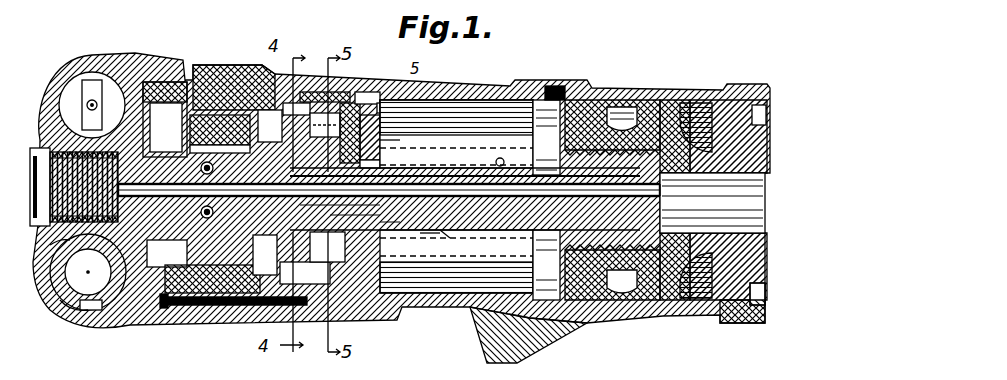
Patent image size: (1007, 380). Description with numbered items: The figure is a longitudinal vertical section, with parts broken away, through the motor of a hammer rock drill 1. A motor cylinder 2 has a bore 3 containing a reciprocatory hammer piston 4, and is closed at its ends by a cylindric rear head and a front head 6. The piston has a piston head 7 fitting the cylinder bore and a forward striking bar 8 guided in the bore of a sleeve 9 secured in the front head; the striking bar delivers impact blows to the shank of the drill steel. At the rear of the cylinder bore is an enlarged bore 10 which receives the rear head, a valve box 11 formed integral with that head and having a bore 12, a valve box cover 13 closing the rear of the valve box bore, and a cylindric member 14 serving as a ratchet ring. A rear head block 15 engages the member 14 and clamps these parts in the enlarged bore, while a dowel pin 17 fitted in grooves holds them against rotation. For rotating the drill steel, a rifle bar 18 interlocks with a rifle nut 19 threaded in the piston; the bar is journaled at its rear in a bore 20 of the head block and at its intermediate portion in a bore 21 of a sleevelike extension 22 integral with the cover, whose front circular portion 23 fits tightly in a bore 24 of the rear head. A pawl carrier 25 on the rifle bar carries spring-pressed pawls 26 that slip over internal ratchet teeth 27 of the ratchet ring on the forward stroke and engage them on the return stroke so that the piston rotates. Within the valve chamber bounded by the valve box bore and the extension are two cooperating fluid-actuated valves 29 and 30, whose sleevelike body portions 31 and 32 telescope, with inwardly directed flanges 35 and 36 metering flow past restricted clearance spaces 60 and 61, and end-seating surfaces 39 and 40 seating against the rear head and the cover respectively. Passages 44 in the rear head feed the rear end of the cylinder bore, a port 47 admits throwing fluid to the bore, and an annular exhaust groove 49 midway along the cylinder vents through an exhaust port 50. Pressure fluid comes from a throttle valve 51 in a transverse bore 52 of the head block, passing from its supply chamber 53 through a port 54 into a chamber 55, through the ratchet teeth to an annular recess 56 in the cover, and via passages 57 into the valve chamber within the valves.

The hammer rock drill 1 is at (485, 81).
The motor cylinder 2 is at (606, 95).
The bore 3 is at (432, 300).
The reciprocatory hammer piston 4 is at (668, 108).
The front head 6 is at (740, 98).
The piston head 7 is at (625, 107).
The forward striking bar 8 is at (722, 310).
The sleeve 9 is at (752, 305).
The enlarged bore 10 is at (313, 92).
The valve box 11 is at (360, 296).
The bore 12 is at (350, 310).
The valve box cover 13 is at (246, 300).
The cylindric member 14 is at (205, 90).
The rear head block 15 is at (100, 60).
The dowel pin 17 is at (186, 306).
The rifle bar 18 is at (445, 228).
The rifle nut 19 is at (622, 300).
The bore 20 is at (165, 119).
The bore 21 is at (380, 240).
The sleevelike extension 22 is at (392, 152).
The front circular portion 23 is at (396, 137).
The bore 24 is at (432, 92).
The pawl carrier 25 is at (270, 126).
The spring-pressed pawls 26 is at (183, 95).
The internal ratchet teeth 27 is at (214, 130).
The front valve 29 is at (352, 105).
The rear valve 30 is at (310, 120).
The sleevelike body portion 31 is at (365, 98).
The sleevelike body portion 32 is at (345, 95).
The inwardly directed annular flange 35 is at (395, 305).
The inwardly directed annular flange 36 is at (285, 103).
The annular end-seating surface 39 is at (380, 110).
The annular end-seating surface 40 is at (270, 322).
The passages 44 is at (385, 100).
The port 47 is at (498, 158).
The annular exhaust groove 49 is at (556, 88).
The exhaust port 50 is at (482, 345).
The throttle valve 51 is at (45, 285).
The transverse bore 52 is at (53, 310).
The internal fluid supply chamber 53 is at (74, 270).
The port 54 is at (100, 318).
The chamber 55 is at (150, 268).
The annular recess 56 is at (228, 305).
The passages 57 is at (252, 320).
The restricted clearance space 60 is at (424, 245).
The restricted clearance space 61 is at (328, 247).